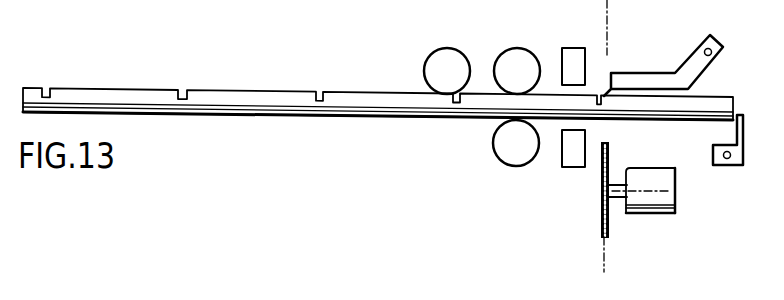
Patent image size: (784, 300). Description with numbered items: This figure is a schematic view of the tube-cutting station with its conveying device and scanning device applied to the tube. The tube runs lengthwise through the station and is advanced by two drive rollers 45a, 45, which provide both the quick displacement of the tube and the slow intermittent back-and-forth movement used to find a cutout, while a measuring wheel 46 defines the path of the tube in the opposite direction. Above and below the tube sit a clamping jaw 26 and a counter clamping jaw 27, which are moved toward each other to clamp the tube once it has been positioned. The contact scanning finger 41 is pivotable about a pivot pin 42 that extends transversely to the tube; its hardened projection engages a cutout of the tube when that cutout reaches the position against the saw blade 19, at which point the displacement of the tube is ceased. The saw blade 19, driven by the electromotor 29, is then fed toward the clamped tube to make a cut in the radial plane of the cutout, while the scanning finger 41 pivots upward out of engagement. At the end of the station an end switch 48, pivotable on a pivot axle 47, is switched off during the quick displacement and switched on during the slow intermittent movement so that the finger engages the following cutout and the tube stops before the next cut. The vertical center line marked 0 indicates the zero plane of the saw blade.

The measuring wheel 46 is at (443, 57).
The drive roller 45a is at (515, 53).
The drive roller 45 is at (515, 155).
The clamping jaw 26 is at (573, 48).
The counter clamping jaw 27 is at (576, 167).
The contact scanning finger 41 is at (657, 78).
The pivot pin 42 is at (706, 47).
The end switch 48 is at (740, 116).
The pivot axle 47 is at (725, 160).
The saw blade 19 is at (600, 222).
The electromotor 29 is at (655, 207).
The reference axis 0 is at (605, 268).